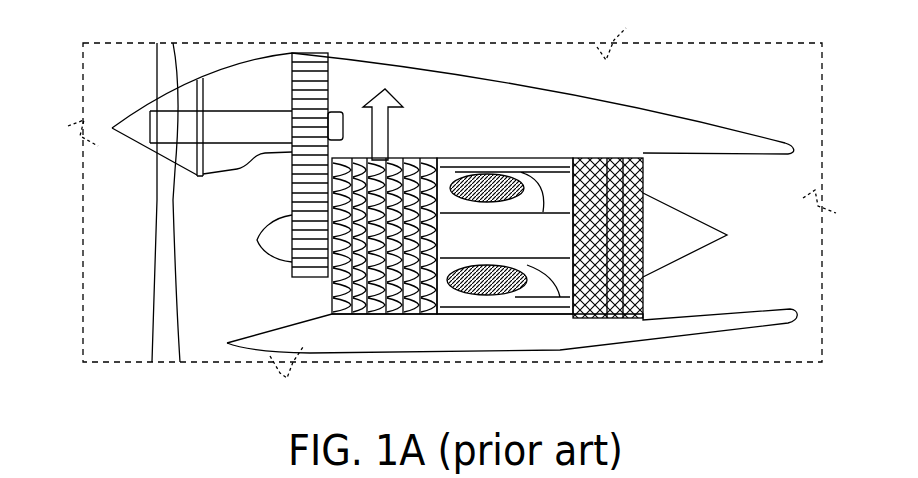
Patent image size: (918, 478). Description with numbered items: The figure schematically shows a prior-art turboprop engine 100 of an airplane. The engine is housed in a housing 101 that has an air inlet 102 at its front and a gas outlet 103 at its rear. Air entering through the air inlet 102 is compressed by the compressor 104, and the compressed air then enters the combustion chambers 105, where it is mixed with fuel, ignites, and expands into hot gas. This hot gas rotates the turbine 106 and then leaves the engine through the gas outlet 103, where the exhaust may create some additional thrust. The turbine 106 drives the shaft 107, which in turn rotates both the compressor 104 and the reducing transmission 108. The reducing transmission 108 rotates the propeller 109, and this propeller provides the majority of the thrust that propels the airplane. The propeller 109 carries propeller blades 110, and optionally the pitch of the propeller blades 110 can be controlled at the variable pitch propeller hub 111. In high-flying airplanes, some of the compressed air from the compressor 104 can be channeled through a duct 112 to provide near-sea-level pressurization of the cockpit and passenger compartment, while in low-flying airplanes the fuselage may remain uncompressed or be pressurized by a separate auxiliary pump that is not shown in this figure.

The turboprop engine 100 is at (726, 67).
The housing 101 is at (527, 86).
The air inlet 102 is at (242, 338).
The gas outlet 103 is at (752, 310).
The compressor 104 is at (413, 165).
The combustion chambers 105 is at (487, 168).
The turbine 106 is at (616, 157).
The shaft 107 is at (543, 212).
The reducing transmission 108 is at (292, 190).
The propeller 109 is at (194, 59).
The propeller blades 110 is at (155, 90).
The variable pitch propeller hub 111 is at (163, 132).
The duct 112 is at (368, 98).